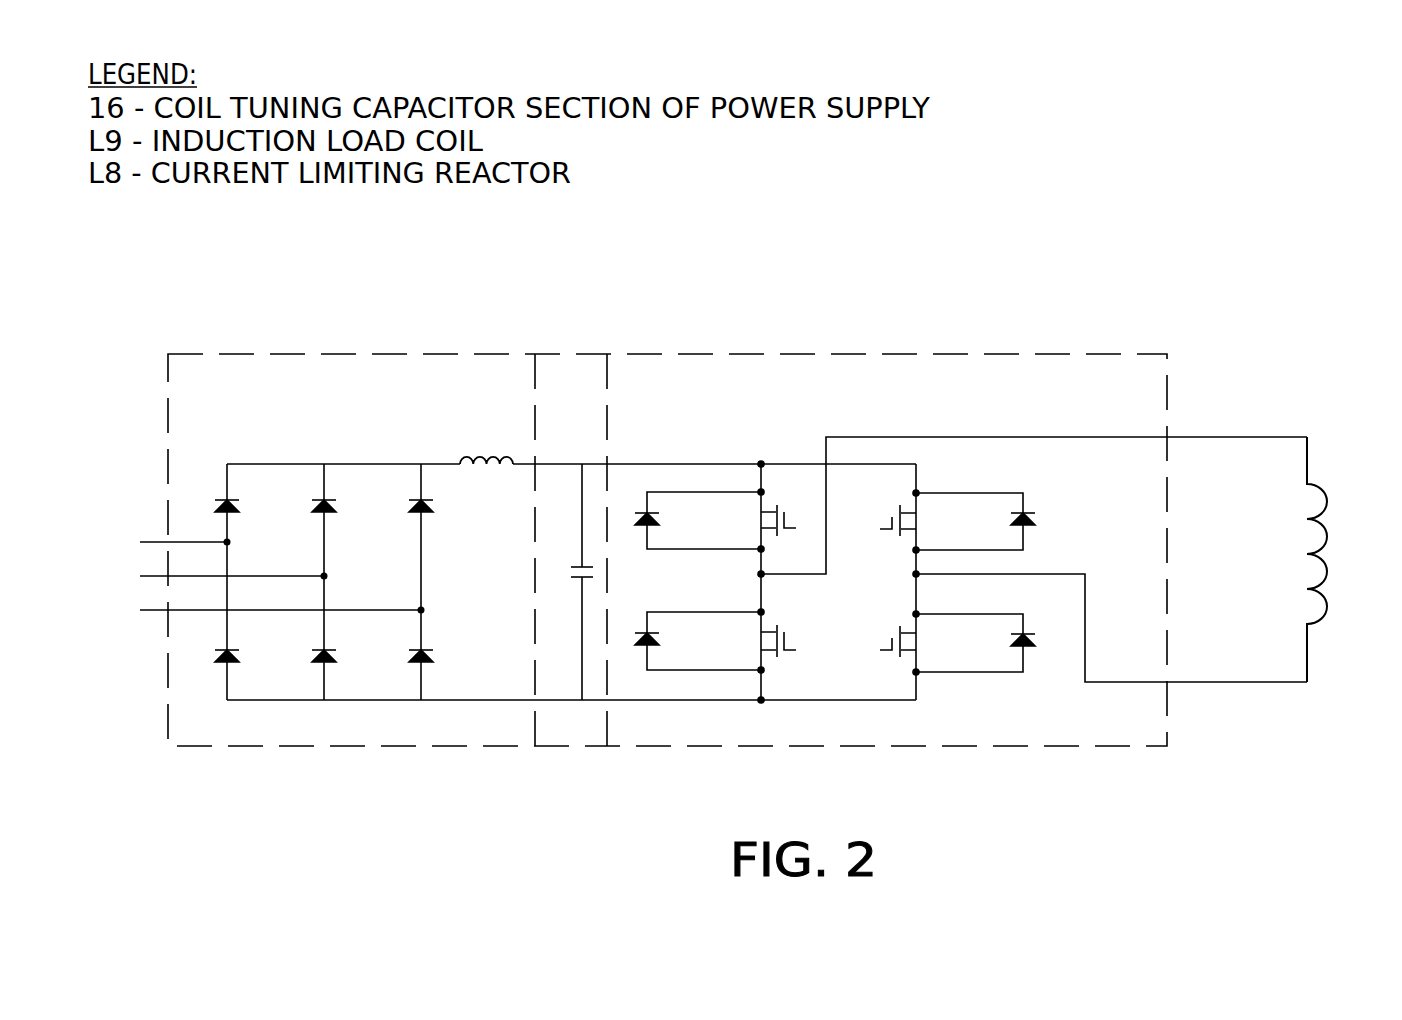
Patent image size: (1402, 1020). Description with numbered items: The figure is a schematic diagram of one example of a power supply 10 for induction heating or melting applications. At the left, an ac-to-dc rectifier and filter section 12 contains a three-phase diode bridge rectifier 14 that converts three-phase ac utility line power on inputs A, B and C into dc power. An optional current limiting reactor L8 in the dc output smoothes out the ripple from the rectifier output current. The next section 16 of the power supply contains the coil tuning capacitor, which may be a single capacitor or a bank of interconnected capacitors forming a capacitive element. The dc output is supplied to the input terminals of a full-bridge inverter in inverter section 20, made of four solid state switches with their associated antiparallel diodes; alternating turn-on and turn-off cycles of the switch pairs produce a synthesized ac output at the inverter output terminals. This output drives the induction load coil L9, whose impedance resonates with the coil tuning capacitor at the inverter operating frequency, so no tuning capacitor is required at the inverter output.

The power supply 10 is at (768, 274).
The ac-to-dc rectifier and filter section 12 is at (342, 354).
The three-phase diode bridge rectifier 14 is at (212, 447).
The coil tuning capacitor section 16 is at (566, 353).
The inverter section 20 is at (930, 353).
The current limiting reactor L8 is at (486, 442).
The induction load coil L9 is at (1336, 559).